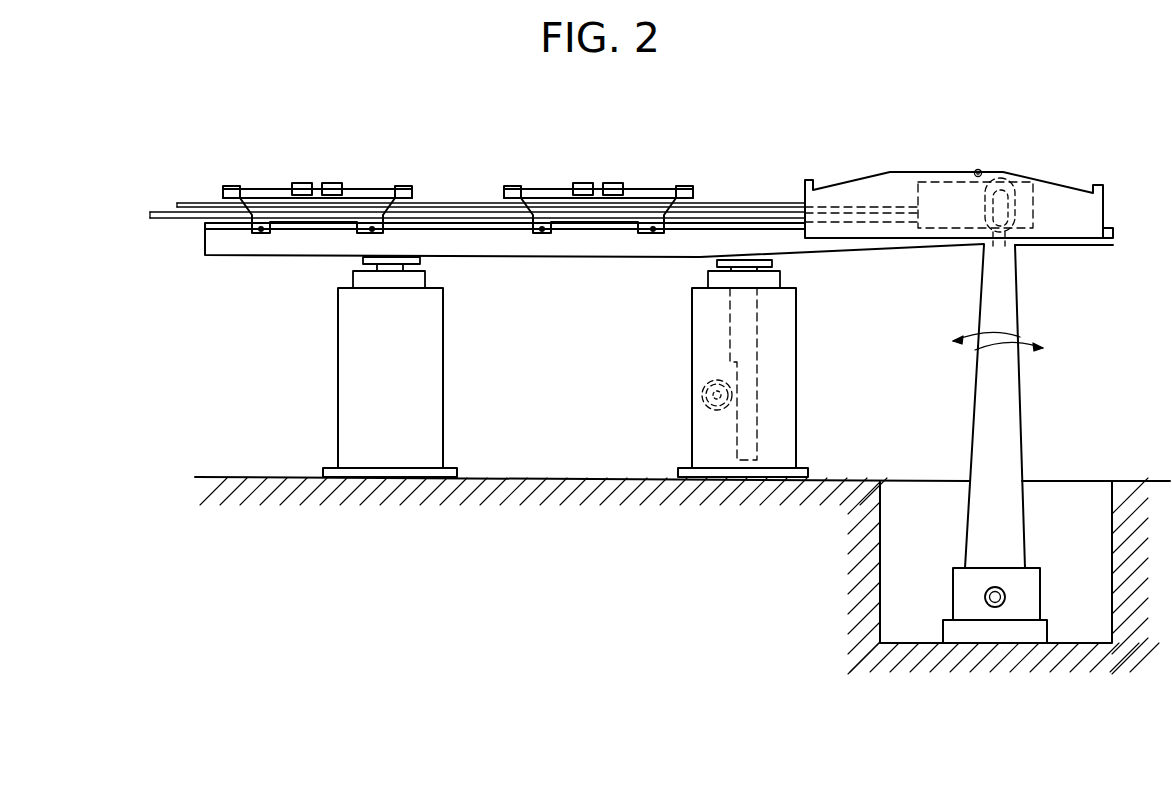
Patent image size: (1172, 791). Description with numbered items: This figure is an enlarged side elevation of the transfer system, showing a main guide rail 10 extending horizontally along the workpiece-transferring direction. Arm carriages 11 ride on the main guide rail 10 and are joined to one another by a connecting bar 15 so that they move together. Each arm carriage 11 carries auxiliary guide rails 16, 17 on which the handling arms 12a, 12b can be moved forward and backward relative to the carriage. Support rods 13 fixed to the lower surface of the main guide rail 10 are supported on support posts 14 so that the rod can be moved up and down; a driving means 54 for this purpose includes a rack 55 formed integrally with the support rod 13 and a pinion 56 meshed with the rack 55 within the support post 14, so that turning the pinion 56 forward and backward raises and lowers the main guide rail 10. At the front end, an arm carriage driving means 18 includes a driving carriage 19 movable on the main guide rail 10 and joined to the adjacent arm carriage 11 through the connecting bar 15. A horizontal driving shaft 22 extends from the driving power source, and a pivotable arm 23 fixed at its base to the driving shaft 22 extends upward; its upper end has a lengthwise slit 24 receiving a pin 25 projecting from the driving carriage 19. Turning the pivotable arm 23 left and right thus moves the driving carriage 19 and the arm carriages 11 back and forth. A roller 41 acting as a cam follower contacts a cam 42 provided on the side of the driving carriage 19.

The main guide rail 10 is at (893, 252).
The arm carriage 11 is at (313, 215).
The handling arm 12a is at (333, 183).
The handling arm 12b is at (301, 183).
The support rod 13 is at (405, 267).
The support post 14 is at (338, 347).
The connecting bar 15 is at (158, 209).
The auxiliary guide rail 16 is at (277, 187).
The auxiliary guide rail 17 is at (398, 188).
The arm carriage driving means 18 is at (1028, 305).
The driving carriage 19 is at (935, 182).
The driving shaft 22 is at (1006, 597).
The pivotable arm 23 is at (1017, 448).
The slit 24 is at (997, 247).
The pin 25 is at (990, 217).
The roller 41 is at (984, 162).
The cam 42 is at (892, 173).
The driving means 54 is at (712, 420).
The rack 55 is at (735, 445).
The pinion 56 is at (700, 386).